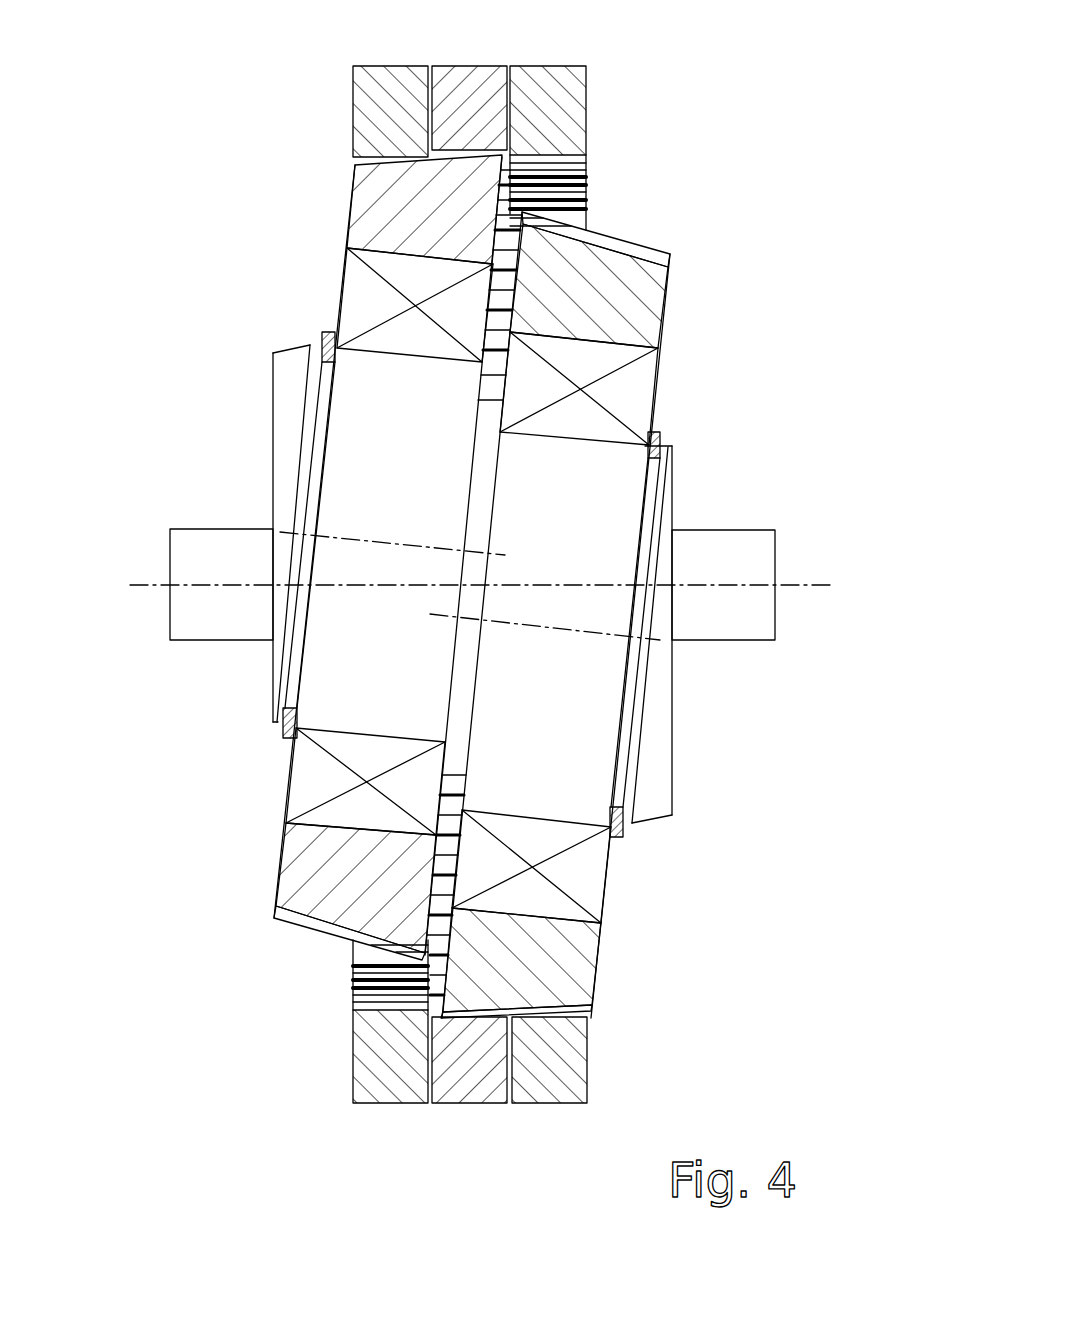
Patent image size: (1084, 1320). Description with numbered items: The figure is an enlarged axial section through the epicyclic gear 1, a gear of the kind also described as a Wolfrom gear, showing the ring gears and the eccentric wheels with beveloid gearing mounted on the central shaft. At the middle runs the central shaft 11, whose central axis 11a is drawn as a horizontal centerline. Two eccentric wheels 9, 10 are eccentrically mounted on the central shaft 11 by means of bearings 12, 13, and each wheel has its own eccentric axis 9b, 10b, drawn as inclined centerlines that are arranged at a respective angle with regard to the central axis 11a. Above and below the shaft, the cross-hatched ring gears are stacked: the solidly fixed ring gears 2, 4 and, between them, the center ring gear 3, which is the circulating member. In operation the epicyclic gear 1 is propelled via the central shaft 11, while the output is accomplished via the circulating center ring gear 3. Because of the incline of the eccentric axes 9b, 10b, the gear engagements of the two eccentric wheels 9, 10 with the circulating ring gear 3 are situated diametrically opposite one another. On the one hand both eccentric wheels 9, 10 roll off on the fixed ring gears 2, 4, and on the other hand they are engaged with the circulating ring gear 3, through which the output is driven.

The epicyclic gear 1 is at (722, 247).
The fixed ring gear 2 is at (380, 90).
The center ring gear 3 is at (477, 80).
The fixed ring gear 4 is at (560, 118).
The eccentric wheel 9 is at (400, 190).
The eccentric axis 9b is at (347, 538).
The eccentric wheel 10 is at (630, 305).
The eccentric axis 10b is at (577, 632).
The central shaft 11 is at (215, 556).
The central axis 11a is at (790, 586).
The bearing 12 is at (313, 780).
The bearing 13 is at (585, 872).